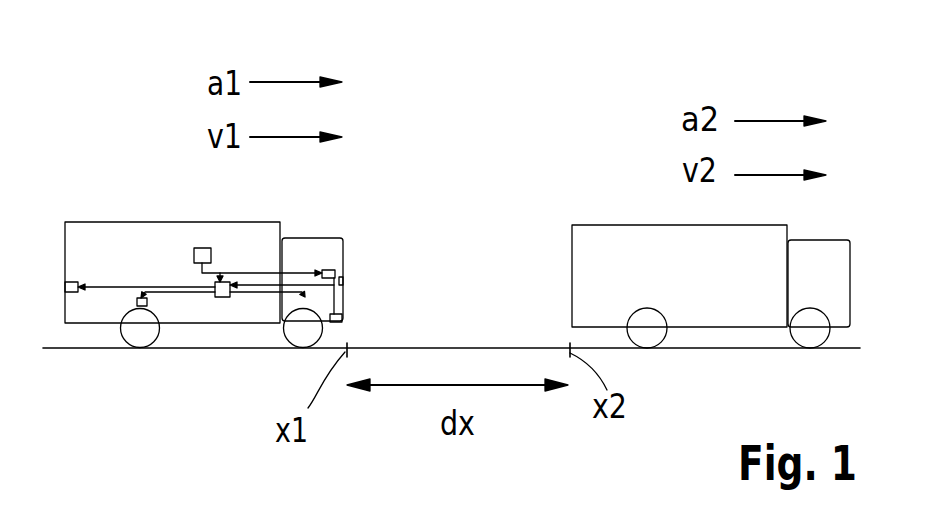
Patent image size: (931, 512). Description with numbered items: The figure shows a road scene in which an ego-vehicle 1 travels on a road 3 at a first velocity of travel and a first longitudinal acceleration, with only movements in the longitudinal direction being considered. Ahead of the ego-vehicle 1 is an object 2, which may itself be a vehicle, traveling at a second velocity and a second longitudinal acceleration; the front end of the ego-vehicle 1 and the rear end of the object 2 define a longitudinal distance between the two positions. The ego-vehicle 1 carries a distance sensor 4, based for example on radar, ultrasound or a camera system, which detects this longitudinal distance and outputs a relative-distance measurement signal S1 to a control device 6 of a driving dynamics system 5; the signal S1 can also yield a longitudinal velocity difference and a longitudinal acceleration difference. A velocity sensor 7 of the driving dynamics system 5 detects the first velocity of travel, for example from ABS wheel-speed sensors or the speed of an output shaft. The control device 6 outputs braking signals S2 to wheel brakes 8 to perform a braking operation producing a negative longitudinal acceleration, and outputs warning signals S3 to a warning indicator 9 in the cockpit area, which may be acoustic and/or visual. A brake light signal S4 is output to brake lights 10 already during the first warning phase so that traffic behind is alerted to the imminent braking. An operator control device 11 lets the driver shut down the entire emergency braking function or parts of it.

The ego-vehicle 1 is at (68, 222).
The object 2 is at (578, 225).
The road 3 is at (503, 347).
The distance sensor 4 is at (343, 316).
The driving dynamics system 5 is at (155, 250).
The control device 6 is at (223, 297).
The velocity sensor 7 is at (197, 248).
The wheel brakes 8 is at (137, 301).
The warning indicator 9 is at (334, 269).
The brake lights 10 is at (65, 287).
The operator control device 11 is at (345, 282).
The relative-distance measurement signal S1 is at (297, 285).
The braking signals S2 is at (192, 293).
The warning signals S3 is at (322, 270).
The brake light signal S4 is at (112, 287).